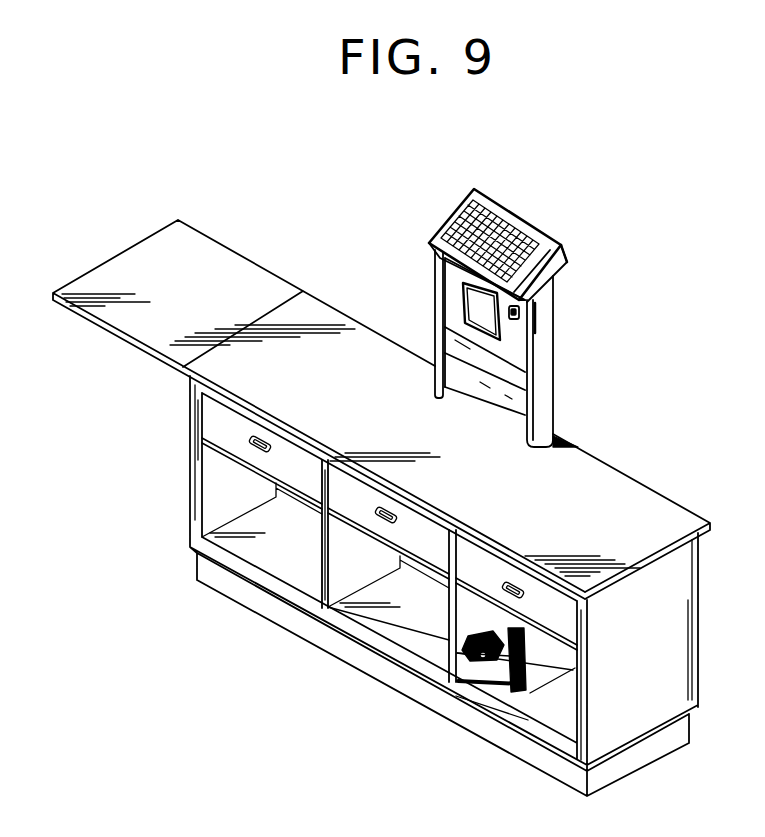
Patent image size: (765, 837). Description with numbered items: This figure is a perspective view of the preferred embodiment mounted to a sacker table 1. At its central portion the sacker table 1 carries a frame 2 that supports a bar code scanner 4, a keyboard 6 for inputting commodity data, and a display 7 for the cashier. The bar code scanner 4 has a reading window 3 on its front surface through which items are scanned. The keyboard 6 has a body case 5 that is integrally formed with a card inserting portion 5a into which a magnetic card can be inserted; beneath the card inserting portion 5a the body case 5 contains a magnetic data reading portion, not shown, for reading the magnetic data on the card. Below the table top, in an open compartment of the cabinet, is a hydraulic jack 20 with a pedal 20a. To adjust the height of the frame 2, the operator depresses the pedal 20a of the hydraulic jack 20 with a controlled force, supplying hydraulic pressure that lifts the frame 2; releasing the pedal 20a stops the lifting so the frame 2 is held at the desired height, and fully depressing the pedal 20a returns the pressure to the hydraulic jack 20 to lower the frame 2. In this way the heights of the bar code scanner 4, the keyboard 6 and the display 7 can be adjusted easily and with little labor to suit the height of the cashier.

The sacker table 1 is at (315, 317).
The frame 2 is at (543, 384).
The reading window 3 is at (478, 303).
The bar code scanner 4 is at (513, 332).
The body case 5 is at (523, 212).
The card inserting portion 5a is at (570, 262).
The keyboard 6 is at (455, 216).
The display 7 is at (493, 385).
The hydraulic jack 20 is at (495, 683).
The pedal 20a is at (447, 667).